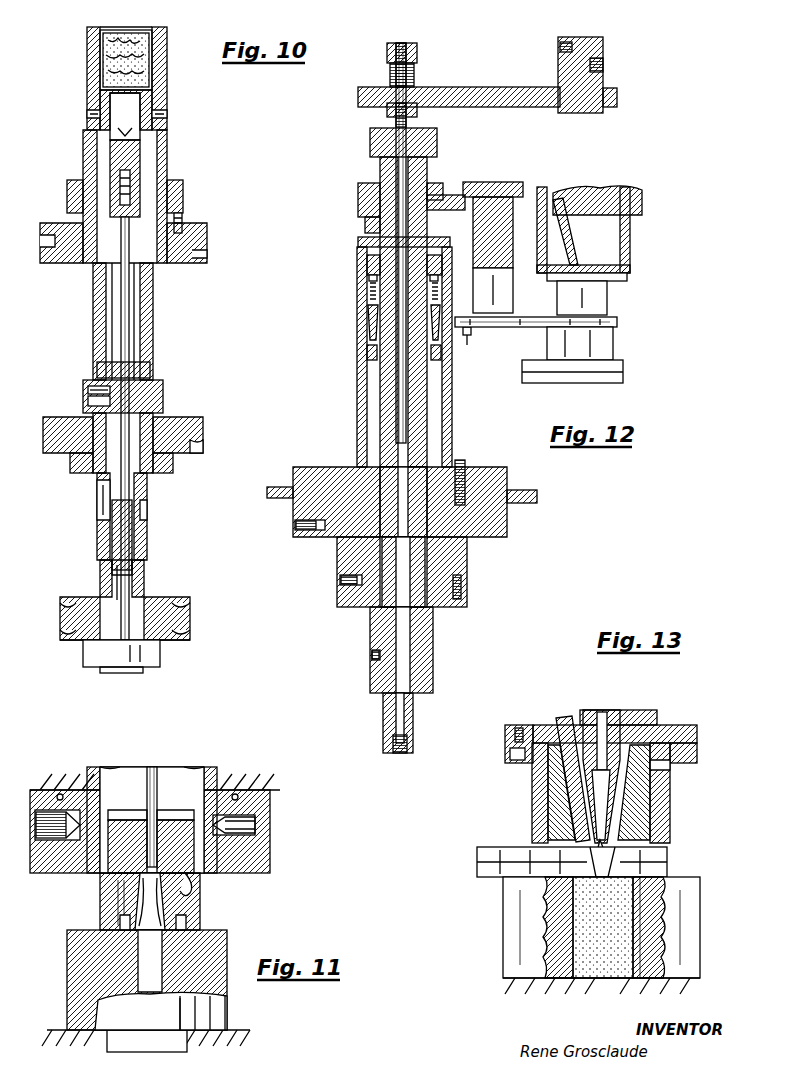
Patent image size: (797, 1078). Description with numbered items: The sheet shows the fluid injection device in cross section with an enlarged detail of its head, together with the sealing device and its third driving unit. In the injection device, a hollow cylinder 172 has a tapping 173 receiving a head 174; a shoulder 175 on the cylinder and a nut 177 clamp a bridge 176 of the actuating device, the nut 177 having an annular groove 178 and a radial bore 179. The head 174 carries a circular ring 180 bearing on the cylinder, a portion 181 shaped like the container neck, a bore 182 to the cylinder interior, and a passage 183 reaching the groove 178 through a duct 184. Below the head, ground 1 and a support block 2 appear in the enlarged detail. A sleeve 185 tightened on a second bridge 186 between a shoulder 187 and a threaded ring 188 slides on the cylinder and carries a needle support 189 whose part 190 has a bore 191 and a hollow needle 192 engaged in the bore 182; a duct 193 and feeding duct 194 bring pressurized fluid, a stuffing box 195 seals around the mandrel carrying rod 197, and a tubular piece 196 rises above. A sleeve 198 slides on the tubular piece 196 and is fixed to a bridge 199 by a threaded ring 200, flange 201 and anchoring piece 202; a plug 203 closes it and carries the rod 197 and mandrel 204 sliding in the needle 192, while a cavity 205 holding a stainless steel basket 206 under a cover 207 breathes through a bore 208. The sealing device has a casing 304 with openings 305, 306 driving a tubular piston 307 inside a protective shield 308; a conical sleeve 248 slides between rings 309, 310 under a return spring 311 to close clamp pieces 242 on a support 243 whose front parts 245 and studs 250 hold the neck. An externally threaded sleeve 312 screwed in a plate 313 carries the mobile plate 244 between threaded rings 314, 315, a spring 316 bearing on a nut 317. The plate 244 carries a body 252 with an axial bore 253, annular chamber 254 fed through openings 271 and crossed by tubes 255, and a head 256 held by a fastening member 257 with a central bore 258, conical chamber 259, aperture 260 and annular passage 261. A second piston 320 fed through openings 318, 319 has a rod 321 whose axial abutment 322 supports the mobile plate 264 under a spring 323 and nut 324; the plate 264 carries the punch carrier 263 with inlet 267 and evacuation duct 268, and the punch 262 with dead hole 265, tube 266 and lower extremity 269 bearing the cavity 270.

In FIG. 11, the ground base 1 is at (240, 1044).
In FIG. 11, the support block 2 is at (228, 1010).
In FIG. 10, the hollow cylinder 172 is at (145, 590).
In FIG. 11, the hollow cylinder 172 is at (100, 775).
In FIG. 11, the tapping 173 is at (125, 780).
In FIG. 11, the head 174 is at (190, 920).
In FIG. 10, the shoulder 175 is at (160, 600).
In FIG. 10, the bridge 176 is at (186, 625).
In FIG. 11, the bridge 176 is at (248, 778).
In FIG. 10, the nut 177 is at (160, 660).
In FIG. 11, the nut 177 is at (265, 806).
In FIG. 11, the annular groove 178 is at (255, 825).
In FIG. 11, the radial bore 179 is at (75, 870).
In FIG. 11, the circular ring 180 is at (198, 890).
In FIG. 11, the portion 181 is at (112, 921).
In FIG. 11, the bore 182 is at (150, 972).
In FIG. 11, the passage 183 is at (200, 880).
In FIG. 11, the duct 184 is at (118, 897).
In FIG. 10, the sleeve 185 is at (150, 522).
In FIG. 10, the second bridge 186 is at (203, 437).
In FIG. 10, the shoulder 187 is at (165, 417).
In FIG. 10, the threaded ring 188 is at (174, 468).
In FIG. 10, the needle support 189 is at (163, 396).
In FIG. 10, the part 190 is at (150, 540).
In FIG. 10, the bore 191 is at (128, 505).
In FIG. 10, the hollow needle 192 is at (118, 584).
In FIG. 10, the duct 193 is at (86, 401).
In FIG. 10, the feeding duct 194 is at (86, 390).
In FIG. 10, the stuffing box 195 is at (98, 368).
In FIG. 10, the tubular piece 196 is at (95, 300).
In FIG. 10, the mandrel carrying rod 197 is at (130, 308).
In FIG. 10, the sleeve 198 is at (85, 142).
In FIG. 10, the bridge 199 is at (207, 241).
In FIG. 10, the threaded ring 200 is at (66, 200).
In FIG. 10, the flange 201 is at (178, 182).
In FIG. 10, the anchoring piece 202 is at (183, 226).
In FIG. 10, the plug 203 is at (150, 100).
In FIG. 10, the mandrel 204 is at (110, 484).
In FIG. 10, the cavity 205 is at (158, 80).
In FIG. 10, the stainless steel basket 206 is at (164, 56).
In FIG. 10, the cover 207 is at (162, 30).
In FIG. 10, the bore 208 is at (92, 112).
In FIG. 12, the pieces 242 is at (547, 330).
In FIG. 12, the support 243 is at (510, 304).
In FIG. 12, the mobile plate 244 is at (358, 200).
In FIG. 12, the front part 245 is at (615, 323).
In FIG. 12, the conical sleeve 248 is at (368, 320).
In FIG. 12, the studs 250 is at (468, 342).
In FIG. 12, the body 252 is at (630, 245).
In FIG. 13, the body 252 is at (698, 726).
In FIG. 13, the axial bore 253 is at (637, 724).
In FIG. 12, the annular chamber 254 is at (620, 274).
In FIG. 12, the tubes 255 is at (550, 195).
In FIG. 13, the tubes 255 is at (562, 718).
In FIG. 12, the head 256 is at (608, 305).
In FIG. 13, the head 256 is at (660, 805).
In FIG. 13, the fastening member 257 is at (510, 748).
In FIG. 13, the central bore 258 is at (562, 798).
In FIG. 13, the chamber 259 is at (600, 815).
In FIG. 13, the aperture 260 is at (660, 783).
In FIG. 13, the annular passage 261 is at (640, 836).
In FIG. 13, the punch 262 is at (612, 715).
In FIG. 12, the punch carrier 263 is at (604, 47).
In FIG. 12, the mobile plate 264 is at (512, 90).
In FIG. 13, the dead hole 265 is at (598, 846).
In FIG. 13, the tube 266 is at (603, 720).
In FIG. 12, the inlet 267 is at (604, 66).
In FIG. 12, the evacuation duct 268 is at (560, 47).
In FIG. 13, the lower extremity 269 is at (645, 858).
In FIG. 13, the cavity 270 is at (601, 935).
In FIG. 12, the openings 271 is at (612, 192).
In FIG. 12, the casing 304 is at (508, 522).
In FIG. 12, the opening 305 is at (340, 581).
In FIG. 12, the opening 306 is at (297, 529).
In FIG. 12, the piston 307 is at (370, 403).
In FIG. 12, the protective shield 308 is at (452, 400).
In FIG. 12, the ring 309 is at (367, 358).
In FIG. 12, the ring 310 is at (368, 277).
In FIG. 12, the return spring 311 is at (370, 290).
In FIG. 12, the externally threaded sleeve 312 is at (367, 258).
In FIG. 12, the plate 313 is at (358, 242).
In FIG. 12, the threaded ring 314 is at (365, 224).
In FIG. 12, the threaded ring 315 is at (440, 182).
In FIG. 12, the spring 316 is at (380, 165).
In FIG. 12, the nut 317 is at (437, 135).
In FIG. 12, the opening 318 is at (408, 722).
In FIG. 12, the opening 319 is at (371, 658).
In FIG. 12, the piston 320 is at (432, 642).
In FIG. 12, the rod 321 is at (410, 432).
In FIG. 12, the axial abutment 322 is at (387, 108).
In FIG. 12, the spring 323 is at (416, 74).
In FIG. 12, the nut 324 is at (418, 55).